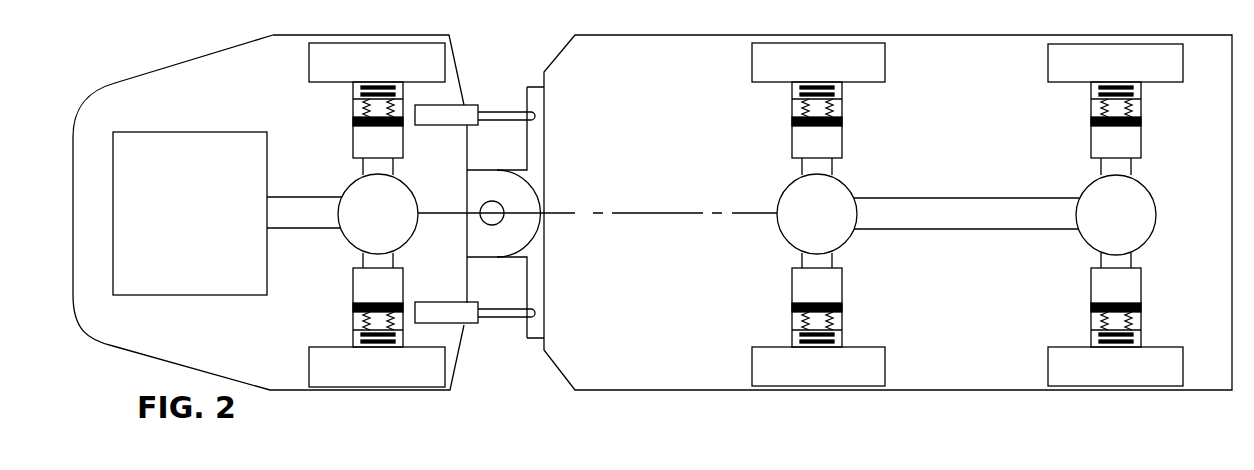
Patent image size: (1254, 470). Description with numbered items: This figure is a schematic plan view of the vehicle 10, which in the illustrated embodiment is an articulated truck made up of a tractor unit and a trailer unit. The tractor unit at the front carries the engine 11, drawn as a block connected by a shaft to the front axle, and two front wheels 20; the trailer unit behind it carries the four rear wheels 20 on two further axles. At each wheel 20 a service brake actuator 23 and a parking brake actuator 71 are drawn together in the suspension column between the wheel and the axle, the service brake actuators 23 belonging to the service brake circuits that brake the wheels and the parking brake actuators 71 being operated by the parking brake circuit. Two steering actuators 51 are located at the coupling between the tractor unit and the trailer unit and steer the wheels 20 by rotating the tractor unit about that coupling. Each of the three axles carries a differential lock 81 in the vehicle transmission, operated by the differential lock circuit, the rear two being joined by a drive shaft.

The vehicle 10 is at (166, 18).
The engine 11 is at (204, 231).
The wheels 20 is at (440, 47).
The service brake actuator 23 is at (701, 214).
The parking brake actuator 71 is at (353, 110).
The steering actuator 51 is at (479, 104).
The differential lock 81 is at (409, 232).